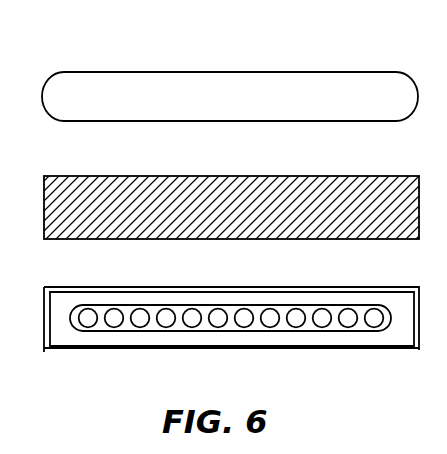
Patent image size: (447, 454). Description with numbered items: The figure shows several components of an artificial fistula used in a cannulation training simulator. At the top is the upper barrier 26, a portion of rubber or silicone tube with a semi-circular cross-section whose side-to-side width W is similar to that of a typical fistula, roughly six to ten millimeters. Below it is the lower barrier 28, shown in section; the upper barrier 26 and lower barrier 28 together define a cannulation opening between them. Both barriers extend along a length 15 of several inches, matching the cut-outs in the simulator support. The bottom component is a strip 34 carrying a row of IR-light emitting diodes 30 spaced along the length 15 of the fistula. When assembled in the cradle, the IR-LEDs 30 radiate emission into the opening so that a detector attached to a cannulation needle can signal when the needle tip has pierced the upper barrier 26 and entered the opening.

The length 15 is at (43, 46).
The upper barrier 26 is at (358, 83).
The cross-sectional width W is at (193, 72).
The lower barrier 28 is at (360, 180).
The IR-light emitting diodes 30 is at (270, 328).
The strip 34 is at (347, 331).